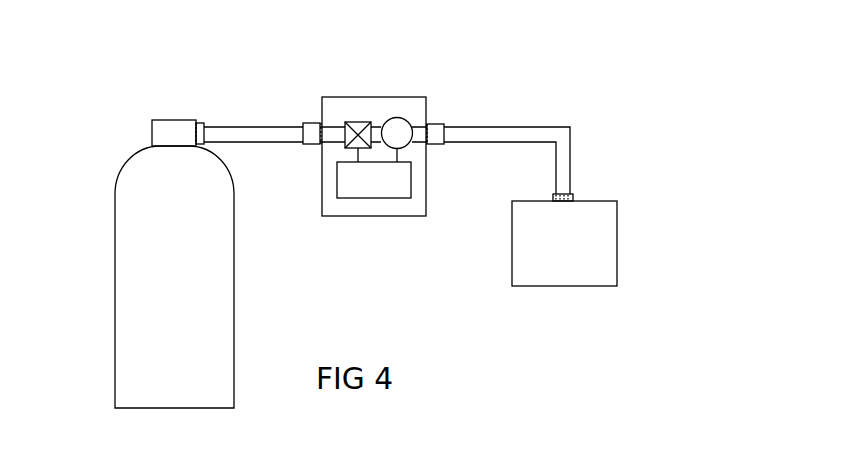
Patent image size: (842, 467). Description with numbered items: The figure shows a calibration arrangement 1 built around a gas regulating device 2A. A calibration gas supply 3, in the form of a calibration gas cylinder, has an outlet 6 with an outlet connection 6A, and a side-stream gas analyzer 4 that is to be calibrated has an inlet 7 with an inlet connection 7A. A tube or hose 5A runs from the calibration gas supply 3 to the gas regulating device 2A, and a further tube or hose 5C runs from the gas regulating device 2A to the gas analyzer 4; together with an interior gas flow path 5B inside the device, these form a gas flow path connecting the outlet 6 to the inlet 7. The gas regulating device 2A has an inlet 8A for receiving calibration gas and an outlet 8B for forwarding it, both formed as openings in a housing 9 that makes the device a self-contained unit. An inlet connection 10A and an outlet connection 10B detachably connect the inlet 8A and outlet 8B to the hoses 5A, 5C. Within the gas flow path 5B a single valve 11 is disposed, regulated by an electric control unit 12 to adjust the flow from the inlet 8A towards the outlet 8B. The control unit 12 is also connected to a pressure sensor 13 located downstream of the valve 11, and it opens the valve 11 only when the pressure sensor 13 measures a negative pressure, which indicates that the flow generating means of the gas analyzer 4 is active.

The calibration arrangement 1 is at (712, 88).
The gas regulating device 2A is at (362, 83).
The calibration gas supply 3 is at (133, 290).
The side-stream gas analyzer 4 is at (605, 253).
The tube or hose 5A is at (240, 133).
The interior gas flow path 5B is at (338, 135).
The tube or hose 5C is at (535, 132).
The outlet of the calibration gas supply 6 is at (197, 128).
The outlet connection 6A is at (199, 124).
The inlet of the gas analyzer 7 is at (567, 195).
The inlet connection 7A is at (575, 197).
The inlet 8A is at (320, 132).
The outlet 8B is at (435, 124).
The housing 9 is at (385, 215).
The inlet connection 10A is at (310, 146).
The outlet connection 10B is at (437, 146).
The valve 11 is at (353, 123).
The electric control unit 12 is at (387, 192).
The pressure sensor 13 is at (406, 121).